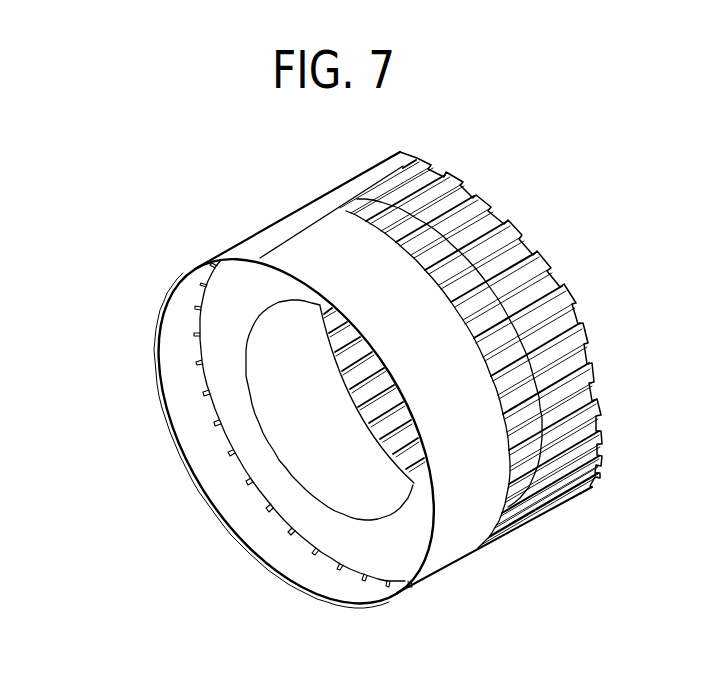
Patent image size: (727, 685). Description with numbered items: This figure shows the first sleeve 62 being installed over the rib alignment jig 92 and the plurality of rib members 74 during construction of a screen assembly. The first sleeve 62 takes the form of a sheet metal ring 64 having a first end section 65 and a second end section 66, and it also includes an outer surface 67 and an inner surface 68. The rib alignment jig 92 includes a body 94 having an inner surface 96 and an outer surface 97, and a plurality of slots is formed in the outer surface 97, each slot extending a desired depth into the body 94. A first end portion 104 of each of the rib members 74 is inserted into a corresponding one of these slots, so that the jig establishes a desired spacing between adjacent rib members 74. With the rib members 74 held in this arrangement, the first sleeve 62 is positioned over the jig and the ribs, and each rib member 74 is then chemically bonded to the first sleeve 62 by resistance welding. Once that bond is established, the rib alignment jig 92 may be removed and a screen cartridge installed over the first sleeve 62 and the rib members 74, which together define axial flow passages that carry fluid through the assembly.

The first sleeve 62 is at (126, 333).
The sheet metal ring 64 is at (268, 582).
The first end section 65 is at (283, 233).
The second end section 66 is at (402, 154).
The outer surface 67 is at (472, 490).
The inner surface 68 is at (213, 478).
The rib members 74 is at (550, 318).
The rib alignment jig 92 is at (158, 397).
The body 94 is at (392, 552).
The inner surface 96 is at (282, 384).
The outer surface 97 is at (517, 380).
The first end portion 104 is at (532, 435).